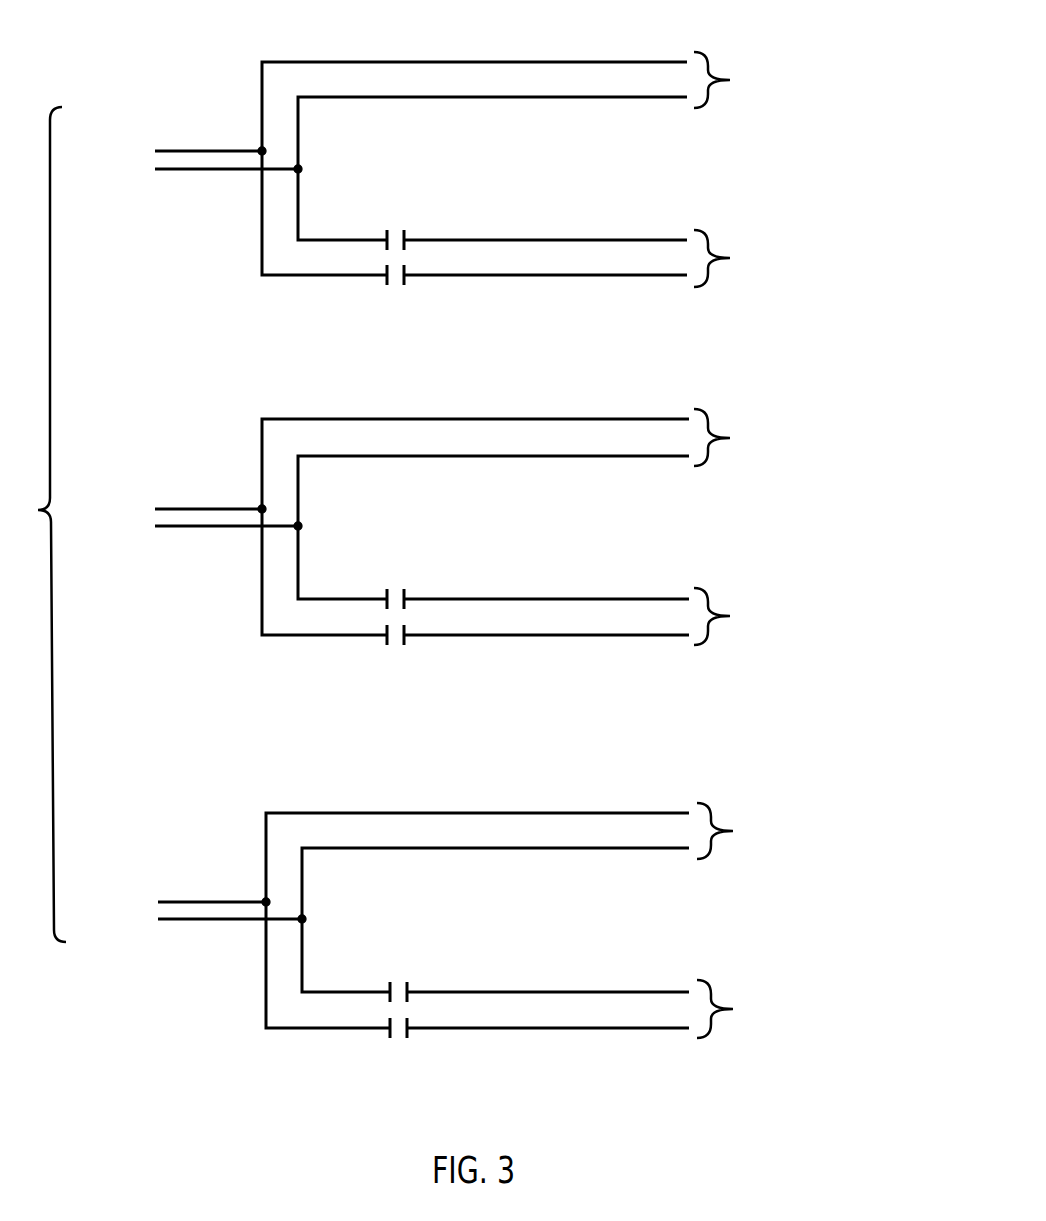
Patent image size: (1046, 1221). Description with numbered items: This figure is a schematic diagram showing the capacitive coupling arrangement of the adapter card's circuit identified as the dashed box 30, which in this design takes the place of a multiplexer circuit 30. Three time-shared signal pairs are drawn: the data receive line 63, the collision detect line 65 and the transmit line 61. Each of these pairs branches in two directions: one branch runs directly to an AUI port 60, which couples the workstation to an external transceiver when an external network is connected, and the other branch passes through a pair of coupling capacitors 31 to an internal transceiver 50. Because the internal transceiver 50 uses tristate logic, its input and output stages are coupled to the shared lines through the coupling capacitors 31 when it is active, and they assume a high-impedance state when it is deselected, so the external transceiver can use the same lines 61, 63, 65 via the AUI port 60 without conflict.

The multiplexer circuit 30 is at (471, 561).
The coupling capacitors 31 is at (395, 235).
The internal transceiver 50 is at (847, 247).
The AUI port 60 is at (783, 65).
The transmit line 61 is at (202, 910).
The data receive line 63 is at (192, 158).
The collision detect line 65 is at (193, 517).